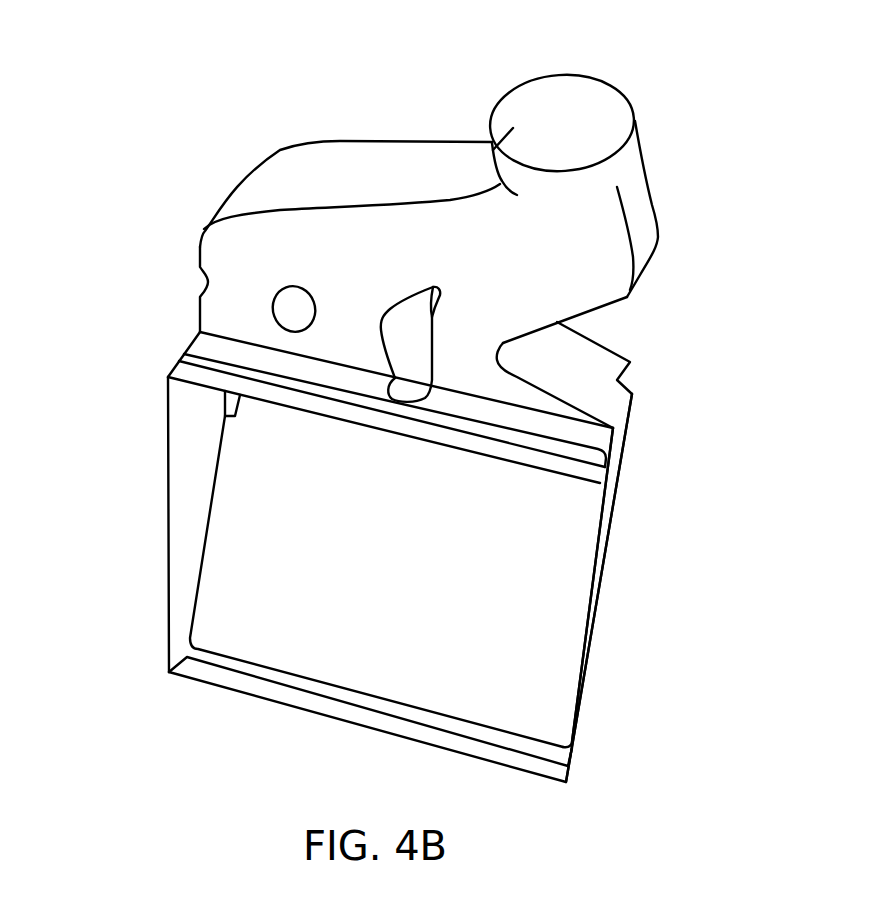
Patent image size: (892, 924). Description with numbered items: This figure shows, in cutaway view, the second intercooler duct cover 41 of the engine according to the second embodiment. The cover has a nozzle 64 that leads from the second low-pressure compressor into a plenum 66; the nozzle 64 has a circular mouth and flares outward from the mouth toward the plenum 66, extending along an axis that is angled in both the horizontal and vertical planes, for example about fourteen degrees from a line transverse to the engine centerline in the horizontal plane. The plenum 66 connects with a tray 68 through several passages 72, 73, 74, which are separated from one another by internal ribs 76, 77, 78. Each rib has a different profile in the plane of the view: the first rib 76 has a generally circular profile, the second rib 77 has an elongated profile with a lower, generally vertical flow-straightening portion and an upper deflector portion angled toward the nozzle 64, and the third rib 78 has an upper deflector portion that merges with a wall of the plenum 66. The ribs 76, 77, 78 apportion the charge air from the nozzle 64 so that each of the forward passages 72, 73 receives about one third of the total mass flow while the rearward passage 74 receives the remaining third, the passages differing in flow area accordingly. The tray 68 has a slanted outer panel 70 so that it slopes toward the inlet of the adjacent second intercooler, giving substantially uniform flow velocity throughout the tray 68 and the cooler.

The second intercooler duct cover 41 is at (657, 193).
The nozzle 64 is at (580, 93).
The plenum 66 is at (268, 213).
The tray 68 is at (352, 549).
The slanted outer panel 70 is at (563, 592).
The passage 72 is at (218, 286).
The passage 73 is at (390, 328).
The passage 74 is at (507, 381).
The first rib 76 is at (290, 312).
The second rib 77 is at (392, 360).
The third rib 78 is at (527, 347).